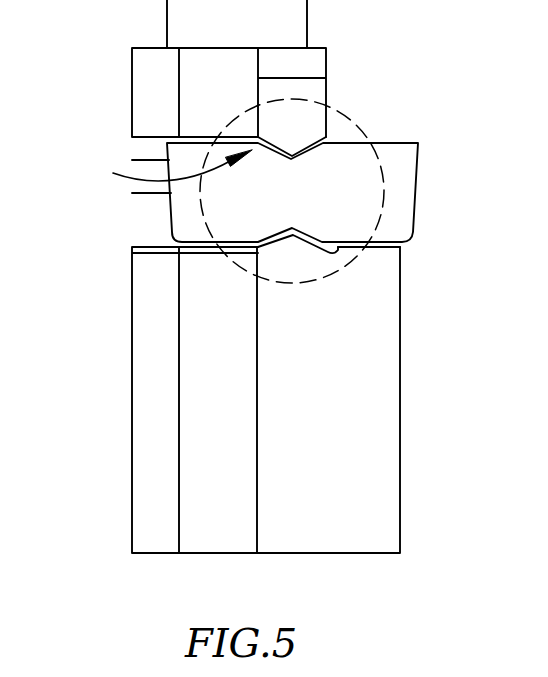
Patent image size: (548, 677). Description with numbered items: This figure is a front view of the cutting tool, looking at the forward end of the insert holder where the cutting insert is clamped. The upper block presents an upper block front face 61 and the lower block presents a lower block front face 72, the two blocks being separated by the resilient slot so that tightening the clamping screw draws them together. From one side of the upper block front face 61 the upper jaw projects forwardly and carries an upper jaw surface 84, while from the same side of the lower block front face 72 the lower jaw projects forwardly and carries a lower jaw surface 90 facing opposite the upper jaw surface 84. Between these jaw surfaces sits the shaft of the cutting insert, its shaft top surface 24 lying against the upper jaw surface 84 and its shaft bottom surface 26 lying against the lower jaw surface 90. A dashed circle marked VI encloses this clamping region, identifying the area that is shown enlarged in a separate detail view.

The upper block front face 61 is at (195, 75).
The shaft top surface 24 is at (305, 143).
The lower jaw surface 90 is at (317, 237).
The lower block front face 72 is at (215, 392).
The shaft bottom surface 26 is at (300, 237).
The upper jaw surface 84 is at (167, 169).
The detail view circle VI is at (364, 134).